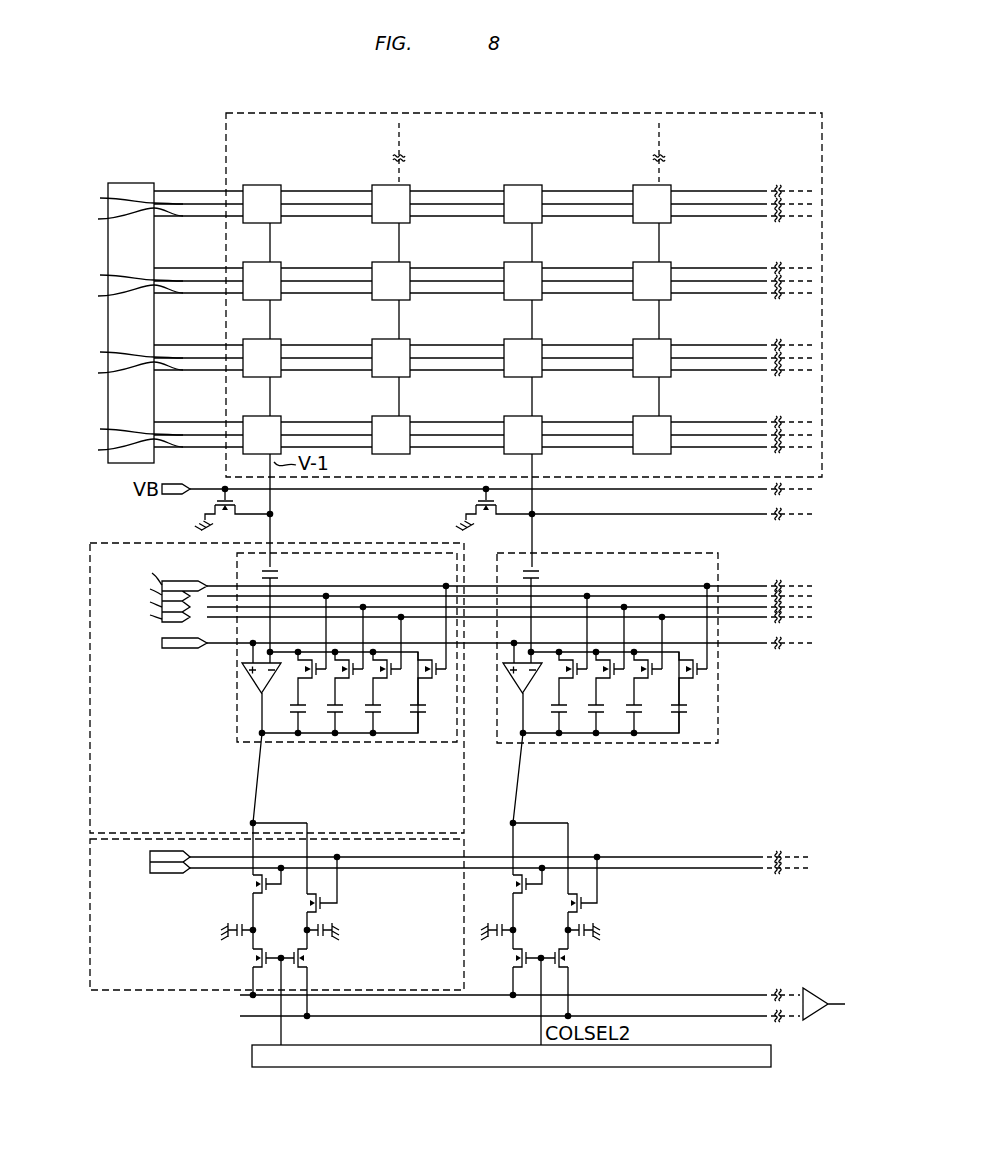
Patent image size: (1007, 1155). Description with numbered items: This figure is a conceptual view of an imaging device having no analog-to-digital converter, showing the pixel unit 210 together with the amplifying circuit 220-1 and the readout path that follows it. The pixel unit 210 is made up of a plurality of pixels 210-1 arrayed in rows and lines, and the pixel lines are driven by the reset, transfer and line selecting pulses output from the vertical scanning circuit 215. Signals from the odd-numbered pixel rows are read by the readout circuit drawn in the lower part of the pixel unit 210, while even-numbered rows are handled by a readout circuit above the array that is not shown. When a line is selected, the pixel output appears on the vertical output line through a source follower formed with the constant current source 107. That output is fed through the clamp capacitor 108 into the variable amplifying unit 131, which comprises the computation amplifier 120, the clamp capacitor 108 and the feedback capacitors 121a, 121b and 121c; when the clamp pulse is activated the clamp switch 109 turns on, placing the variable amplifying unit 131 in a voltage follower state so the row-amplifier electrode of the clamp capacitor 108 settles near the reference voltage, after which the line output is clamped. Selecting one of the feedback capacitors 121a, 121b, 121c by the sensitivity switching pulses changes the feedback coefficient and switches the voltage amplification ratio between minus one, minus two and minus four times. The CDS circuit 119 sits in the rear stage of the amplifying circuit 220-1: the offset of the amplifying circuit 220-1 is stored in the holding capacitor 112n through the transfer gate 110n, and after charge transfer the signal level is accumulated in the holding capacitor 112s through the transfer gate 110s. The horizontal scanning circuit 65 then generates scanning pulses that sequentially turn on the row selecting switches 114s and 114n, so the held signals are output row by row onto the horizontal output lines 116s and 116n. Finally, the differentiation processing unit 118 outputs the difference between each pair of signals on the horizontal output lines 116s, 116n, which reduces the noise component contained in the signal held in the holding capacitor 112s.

The pixel unit 210 is at (600, 113).
The pixel 210-1 is at (283, 413).
The vertical scanning circuit 215 is at (132, 182).
The constant current source 107 is at (204, 510).
The CDS circuit 119 is at (131, 993).
The variable amplifying unit 131 is at (237, 566).
The amplifying circuit 220-1 is at (322, 548).
The clamp capacitor 108 is at (282, 576).
The computation amplifier 120 is at (242, 686).
The feedback capacitor 121a is at (300, 715).
The feedback capacitor 121b is at (338, 715).
The feedback capacitor 121c is at (377, 715).
The clamp switch 109 is at (432, 680).
The transfer gate 110s is at (256, 884).
The transfer gate 110n is at (323, 908).
The holding capacitor 112s is at (230, 922).
The holding capacitor 112n is at (323, 943).
The row selecting switch 114s is at (255, 958).
The row selecting switch 114n is at (307, 963).
The horizontal output line 116s is at (248, 997).
The horizontal output line 116n is at (250, 1017).
The horizontal scanning circuit 65 is at (252, 1058).
The differentiation processing unit 118 is at (819, 1021).